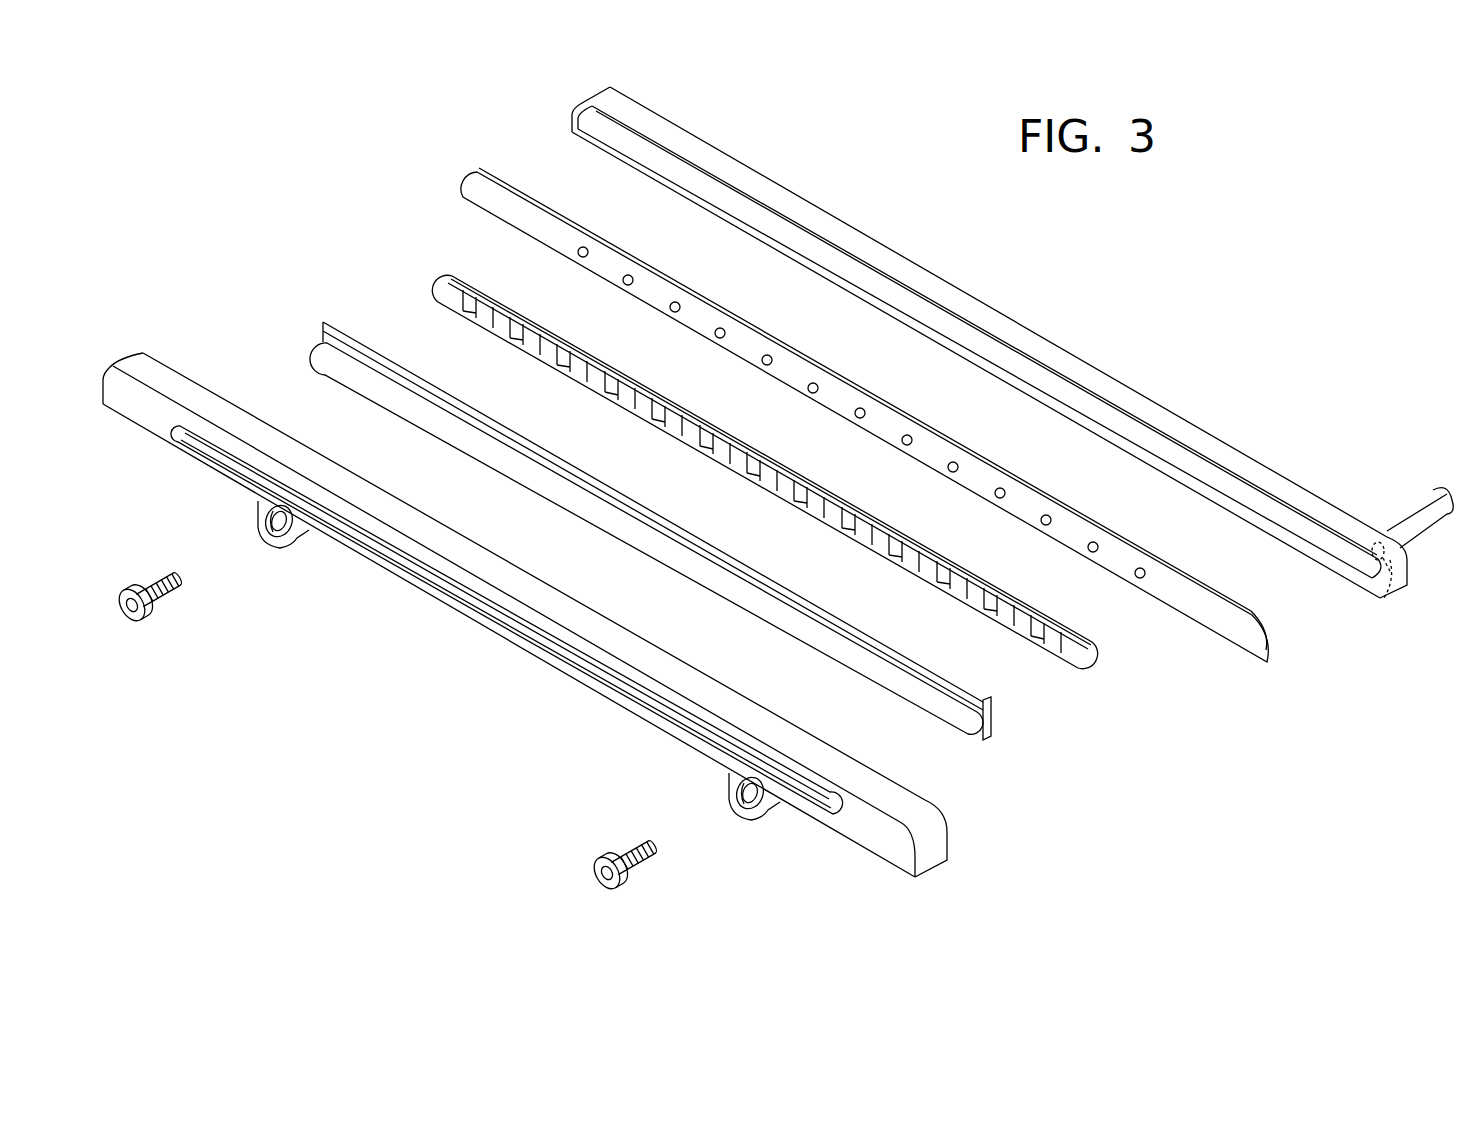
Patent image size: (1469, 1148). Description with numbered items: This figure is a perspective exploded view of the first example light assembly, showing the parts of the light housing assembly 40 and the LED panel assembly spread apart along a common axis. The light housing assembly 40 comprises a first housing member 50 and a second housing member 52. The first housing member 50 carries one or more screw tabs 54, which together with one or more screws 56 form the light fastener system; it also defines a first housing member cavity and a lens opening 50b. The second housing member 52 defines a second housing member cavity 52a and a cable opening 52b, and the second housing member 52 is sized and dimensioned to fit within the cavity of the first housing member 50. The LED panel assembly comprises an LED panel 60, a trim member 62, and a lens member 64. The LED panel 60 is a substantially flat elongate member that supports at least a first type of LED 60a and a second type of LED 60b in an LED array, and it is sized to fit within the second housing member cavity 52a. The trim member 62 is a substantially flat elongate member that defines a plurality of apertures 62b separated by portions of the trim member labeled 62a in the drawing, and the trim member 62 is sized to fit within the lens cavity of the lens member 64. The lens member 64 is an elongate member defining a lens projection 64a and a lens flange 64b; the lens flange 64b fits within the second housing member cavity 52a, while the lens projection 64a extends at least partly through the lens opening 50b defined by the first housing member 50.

The light housing assembly 40 is at (1080, 302).
The first housing member 50 is at (218, 478).
The lens opening 50b is at (500, 628).
The second housing member 52 is at (575, 108).
The second housing member cavity 52a is at (835, 268).
The cable opening 52b is at (1383, 605).
The screw tabs 54 is at (290, 543).
The screws 56 is at (165, 598).
The LED panel 60 is at (463, 180).
The first type of LED 60a is at (579, 256).
The second type of LED 60b is at (670, 311).
The trim member 62 is at (435, 286).
The post of rail 62a is at (480, 320).
The apertures 62b is at (575, 380).
The lens member 64 is at (318, 345).
The lens projection 64a is at (512, 458).
The lens flange 64b is at (310, 325).